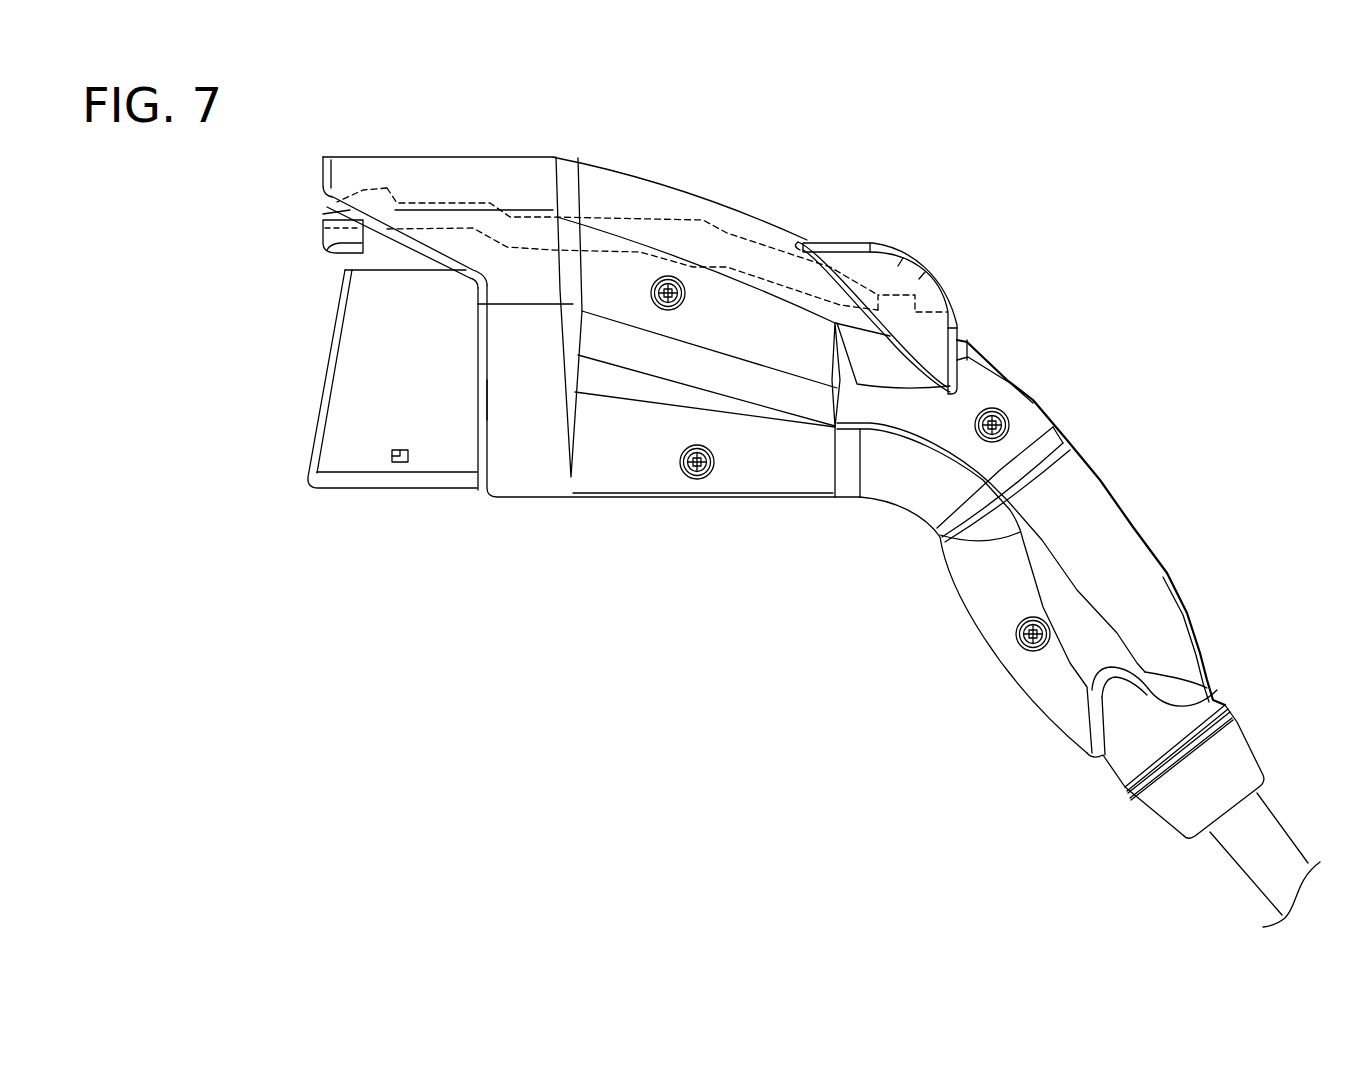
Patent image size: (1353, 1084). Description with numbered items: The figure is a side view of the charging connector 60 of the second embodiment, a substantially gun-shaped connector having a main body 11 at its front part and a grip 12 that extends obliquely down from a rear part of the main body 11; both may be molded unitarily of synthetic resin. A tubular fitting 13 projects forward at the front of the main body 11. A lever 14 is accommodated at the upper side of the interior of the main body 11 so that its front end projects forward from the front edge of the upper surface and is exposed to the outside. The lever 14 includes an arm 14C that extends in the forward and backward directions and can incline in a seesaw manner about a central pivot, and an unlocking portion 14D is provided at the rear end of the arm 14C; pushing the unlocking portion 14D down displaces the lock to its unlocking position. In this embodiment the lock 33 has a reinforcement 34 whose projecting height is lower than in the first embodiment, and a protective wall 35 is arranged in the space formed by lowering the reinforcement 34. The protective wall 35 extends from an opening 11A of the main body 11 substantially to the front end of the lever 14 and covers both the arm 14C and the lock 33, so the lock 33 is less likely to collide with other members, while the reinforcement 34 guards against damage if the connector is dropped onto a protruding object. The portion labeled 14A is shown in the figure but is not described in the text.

The main body 11 is at (749, 209).
The opening 11A is at (477, 403).
The grip 12 is at (1191, 556).
The tubular fitting 13 is at (357, 457).
The lever 14 is at (656, 218).
The front wall of hood 14A is at (343, 243).
The arm 14C is at (547, 220).
The unlocking portion 14D is at (877, 242).
The lock 33 is at (323, 235).
The reinforcement 34 is at (387, 188).
The protective wall 35 is at (350, 165).
The charging connector 60 is at (833, 187).